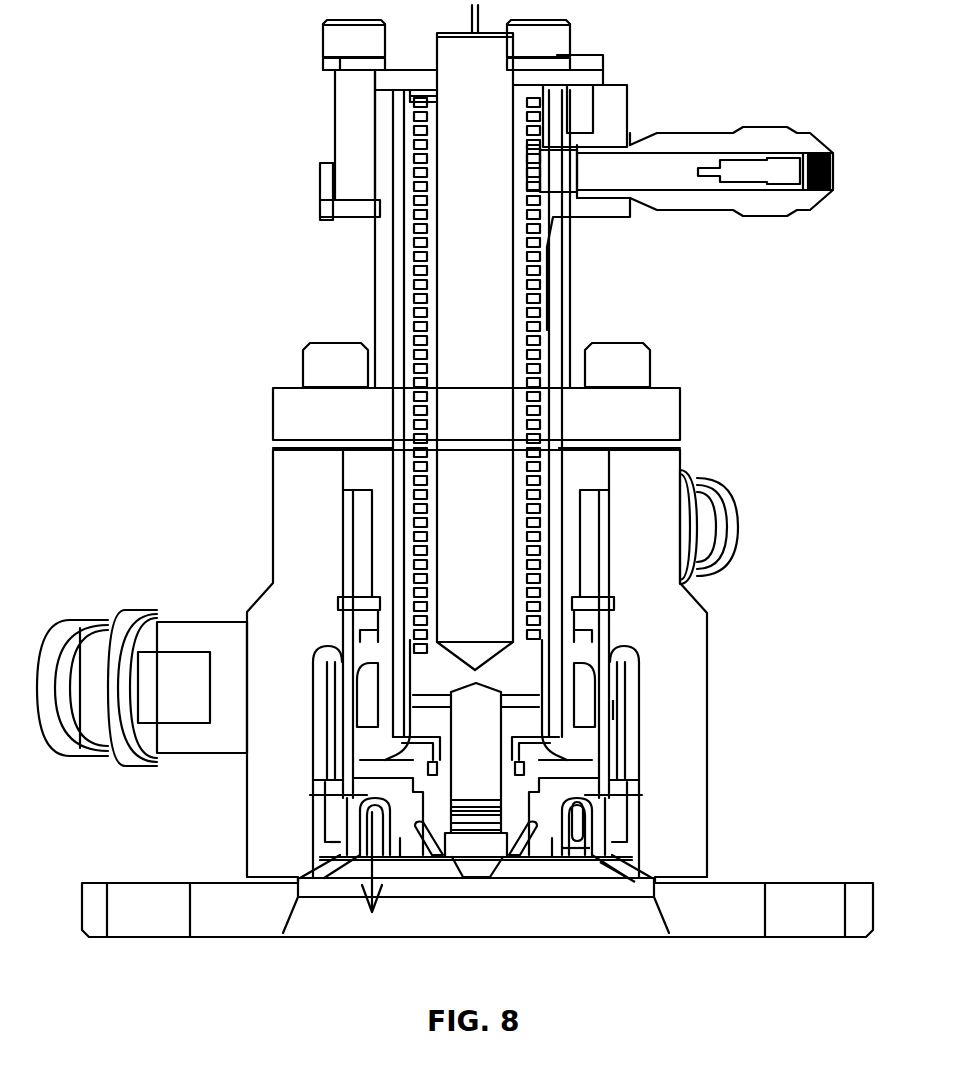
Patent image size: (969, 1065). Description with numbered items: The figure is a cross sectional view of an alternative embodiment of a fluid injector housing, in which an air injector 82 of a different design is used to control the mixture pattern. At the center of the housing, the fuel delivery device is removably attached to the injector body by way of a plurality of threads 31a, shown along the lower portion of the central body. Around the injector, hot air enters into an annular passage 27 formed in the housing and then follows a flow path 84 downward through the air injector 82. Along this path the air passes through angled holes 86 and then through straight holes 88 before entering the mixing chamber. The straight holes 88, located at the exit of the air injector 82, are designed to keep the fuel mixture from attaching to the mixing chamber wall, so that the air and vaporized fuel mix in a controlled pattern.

The annular passage 27 is at (627, 706).
The threads 31a is at (493, 797).
The angled holes 86 is at (600, 825).
The straight holes 88 is at (578, 845).
The flow path 84 is at (365, 805).
The air injector 82 is at (623, 872).